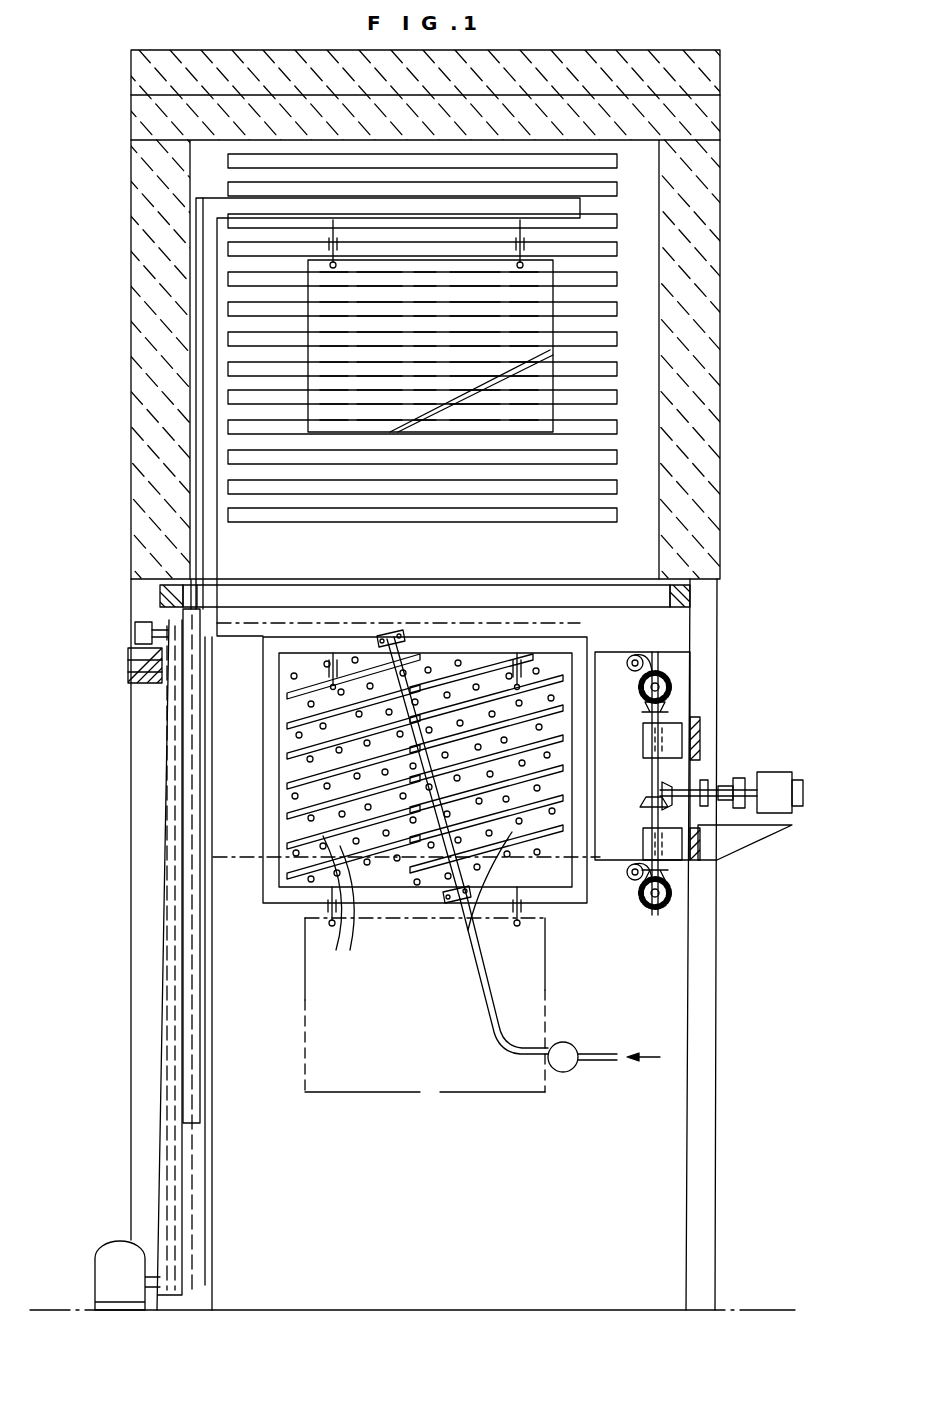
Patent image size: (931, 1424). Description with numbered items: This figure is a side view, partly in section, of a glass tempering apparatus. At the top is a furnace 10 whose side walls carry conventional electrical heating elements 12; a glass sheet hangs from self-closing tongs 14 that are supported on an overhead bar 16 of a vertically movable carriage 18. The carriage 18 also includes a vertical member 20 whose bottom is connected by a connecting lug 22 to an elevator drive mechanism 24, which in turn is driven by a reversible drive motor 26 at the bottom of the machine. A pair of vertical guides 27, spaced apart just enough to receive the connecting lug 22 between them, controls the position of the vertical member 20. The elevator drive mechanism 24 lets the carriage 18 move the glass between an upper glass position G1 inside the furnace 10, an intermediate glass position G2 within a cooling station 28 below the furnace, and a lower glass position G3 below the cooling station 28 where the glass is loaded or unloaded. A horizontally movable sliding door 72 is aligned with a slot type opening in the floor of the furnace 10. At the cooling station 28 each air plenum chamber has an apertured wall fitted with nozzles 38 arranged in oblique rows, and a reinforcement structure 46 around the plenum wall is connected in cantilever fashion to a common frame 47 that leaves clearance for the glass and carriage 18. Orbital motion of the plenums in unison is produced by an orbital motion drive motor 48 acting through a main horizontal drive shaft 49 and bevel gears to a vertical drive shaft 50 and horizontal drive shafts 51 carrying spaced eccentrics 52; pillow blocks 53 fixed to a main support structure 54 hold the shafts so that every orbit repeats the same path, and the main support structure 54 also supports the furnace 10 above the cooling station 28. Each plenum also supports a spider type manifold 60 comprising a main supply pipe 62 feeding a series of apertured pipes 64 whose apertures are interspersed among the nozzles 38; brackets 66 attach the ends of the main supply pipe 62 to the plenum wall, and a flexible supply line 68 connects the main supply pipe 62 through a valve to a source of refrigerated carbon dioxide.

The furnace 10 is at (732, 157).
The electrical heating elements 12 is at (600, 186).
The self-closing tongs 14 is at (380, 662).
The overhead bar 16 is at (582, 207).
The vertically movable carriage 18 is at (185, 247).
The vertical member 20 is at (203, 305).
The connecting lug 22 is at (182, 622).
The elevator drive mechanism 24 is at (165, 745).
The reversible drive motor 26 is at (108, 1250).
The vertical guides 27 is at (203, 1110).
The cooling station 28 is at (285, 931).
The nozzle 38 is at (467, 656).
The reinforcement structure 46 is at (268, 905).
The common frame 47 is at (595, 775).
The orbital motion drive motor 48 is at (790, 795).
The main horizontal drive shaft 49 is at (712, 782).
The vertical drive shaft 50 is at (648, 790).
The horizontal drive shafts 51 is at (650, 705).
The eccentrics 52 is at (636, 686).
The pillow blocks 53 is at (684, 738).
The main support structure 54 is at (716, 1150).
The spider type manifold 60 is at (445, 920).
The main supply pipe 62 is at (408, 917).
The apertured pipes 64 is at (360, 910).
The brackets 66 is at (488, 928).
The flexible supply line 68 is at (495, 1040).
The sliding door 72 is at (570, 598).
The upper glass position G1 is at (566, 353).
The intermediate glass position G2 is at (295, 738).
The lower glass position G3 is at (348, 1098).